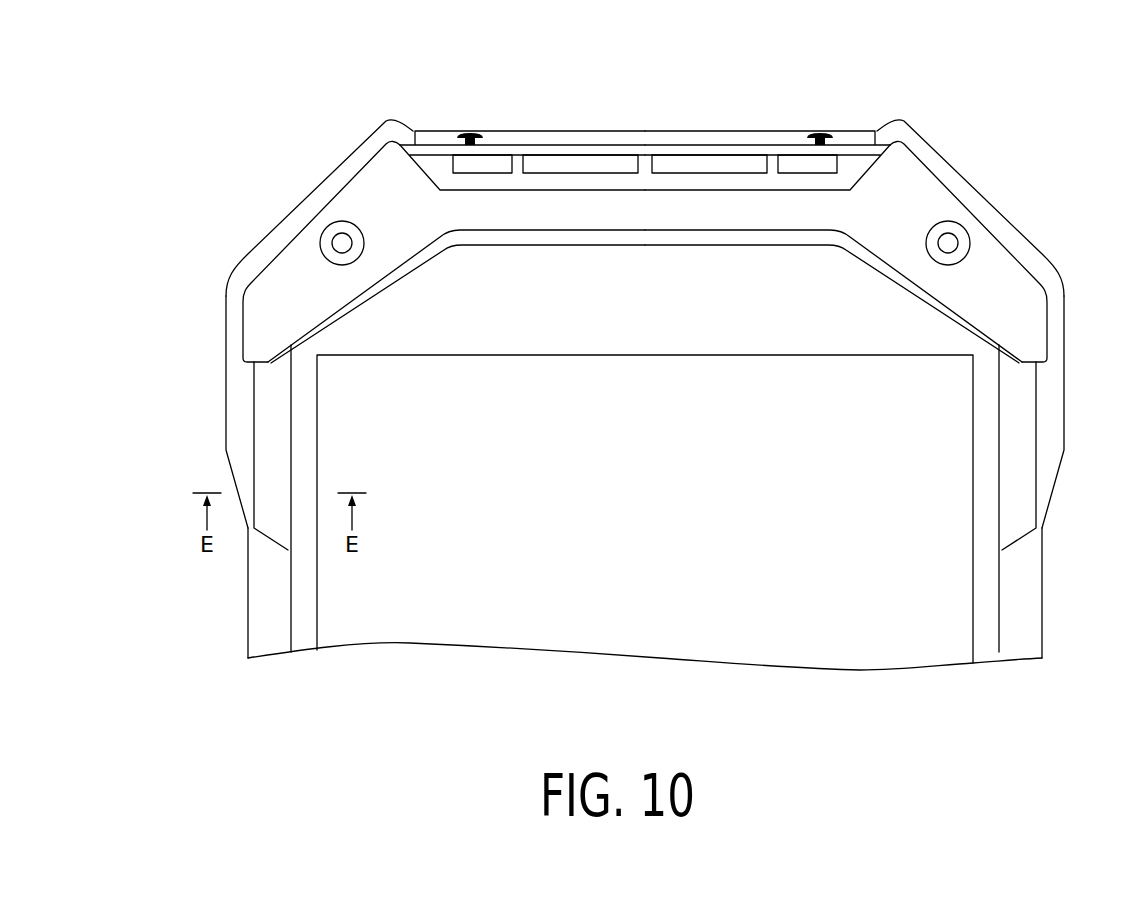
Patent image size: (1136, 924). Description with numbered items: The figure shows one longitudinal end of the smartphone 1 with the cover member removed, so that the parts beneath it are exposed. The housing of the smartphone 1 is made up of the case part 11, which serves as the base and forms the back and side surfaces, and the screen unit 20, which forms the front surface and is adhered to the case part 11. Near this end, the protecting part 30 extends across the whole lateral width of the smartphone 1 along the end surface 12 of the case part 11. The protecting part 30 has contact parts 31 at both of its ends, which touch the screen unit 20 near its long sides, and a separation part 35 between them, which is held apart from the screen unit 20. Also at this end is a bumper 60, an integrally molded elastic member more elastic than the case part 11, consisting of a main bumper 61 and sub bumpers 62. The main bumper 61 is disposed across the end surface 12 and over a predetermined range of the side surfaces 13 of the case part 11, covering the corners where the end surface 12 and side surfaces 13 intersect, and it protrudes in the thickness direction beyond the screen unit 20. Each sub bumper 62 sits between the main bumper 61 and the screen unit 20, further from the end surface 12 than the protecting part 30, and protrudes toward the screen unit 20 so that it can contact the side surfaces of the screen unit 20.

The smartphone 1 is at (845, 86).
The case part 11 is at (645, 155).
The end surface 12 is at (582, 152).
The side surface 13 is at (248, 585).
The screen unit 20 is at (660, 623).
The protecting part 30 is at (645, 215).
The contact part 31 is at (363, 183).
The separation part 35 is at (711, 210).
The bumper 60 is at (157, 313).
The main bumper 61 is at (226, 325).
The sub bumper 62 is at (268, 405).